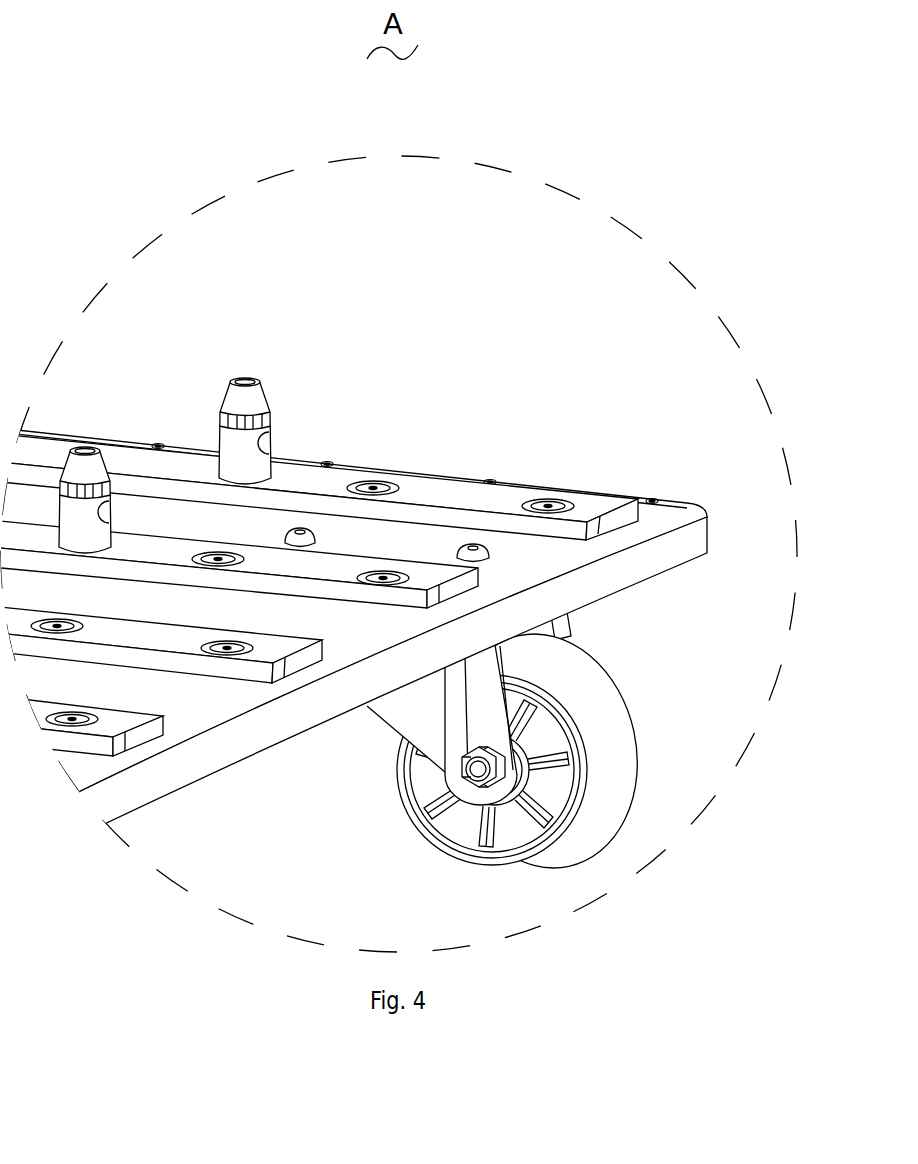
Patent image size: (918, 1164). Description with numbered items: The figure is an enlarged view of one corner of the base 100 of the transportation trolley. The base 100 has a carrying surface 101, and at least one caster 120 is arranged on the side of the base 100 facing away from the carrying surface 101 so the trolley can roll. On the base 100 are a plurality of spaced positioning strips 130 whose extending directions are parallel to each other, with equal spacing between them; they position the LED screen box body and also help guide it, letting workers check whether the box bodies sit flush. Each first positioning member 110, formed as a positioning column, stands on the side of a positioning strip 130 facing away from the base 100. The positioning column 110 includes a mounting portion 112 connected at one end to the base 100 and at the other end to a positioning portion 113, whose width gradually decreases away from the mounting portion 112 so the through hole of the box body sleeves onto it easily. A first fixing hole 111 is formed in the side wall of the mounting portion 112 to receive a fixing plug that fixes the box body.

The base 100 is at (622, 570).
The carrying surface 101 is at (187, 698).
The first positioning member 110 is at (273, 438).
The first fixing hole 111 is at (268, 438).
The mounting portion 112 is at (267, 463).
The positioning portion 113 is at (263, 402).
The caster 120 is at (478, 832).
The positioning strip 130 is at (503, 500).